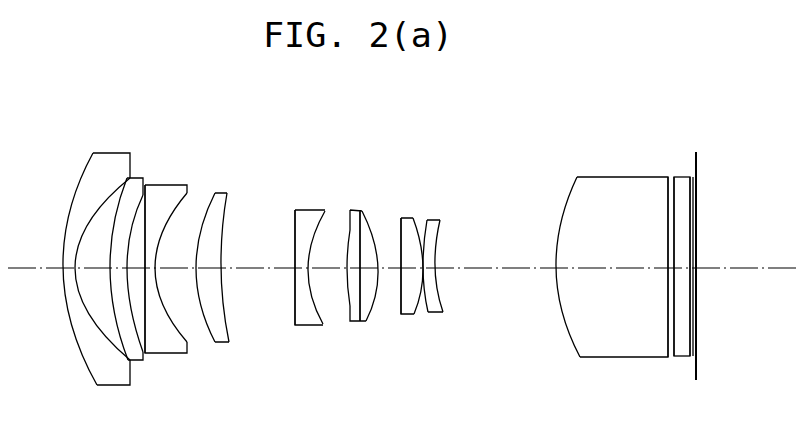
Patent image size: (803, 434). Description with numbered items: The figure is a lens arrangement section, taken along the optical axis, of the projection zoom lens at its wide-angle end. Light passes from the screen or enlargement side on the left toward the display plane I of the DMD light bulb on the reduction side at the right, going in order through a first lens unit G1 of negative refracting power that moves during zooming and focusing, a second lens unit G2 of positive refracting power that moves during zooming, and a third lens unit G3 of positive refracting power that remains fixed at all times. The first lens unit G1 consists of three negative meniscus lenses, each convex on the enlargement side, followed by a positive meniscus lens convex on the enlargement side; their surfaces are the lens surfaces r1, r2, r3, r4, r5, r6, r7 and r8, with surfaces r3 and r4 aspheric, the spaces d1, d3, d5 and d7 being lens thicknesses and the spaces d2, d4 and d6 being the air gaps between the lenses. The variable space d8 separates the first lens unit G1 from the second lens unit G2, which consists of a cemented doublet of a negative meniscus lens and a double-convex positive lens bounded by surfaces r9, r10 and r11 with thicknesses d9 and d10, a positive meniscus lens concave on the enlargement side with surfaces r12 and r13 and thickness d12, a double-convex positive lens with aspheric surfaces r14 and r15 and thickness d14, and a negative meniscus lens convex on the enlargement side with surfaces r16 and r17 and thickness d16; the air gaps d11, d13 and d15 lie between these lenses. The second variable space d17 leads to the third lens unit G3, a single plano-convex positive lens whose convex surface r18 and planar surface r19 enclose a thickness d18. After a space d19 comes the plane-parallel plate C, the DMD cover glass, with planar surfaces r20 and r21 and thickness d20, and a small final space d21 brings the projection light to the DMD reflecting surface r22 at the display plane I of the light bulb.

The first lens unit G1 is at (227, 98).
The second lens unit G2 is at (440, 97).
The third lens unit G3 is at (667, 95).
The plane-parallel plate C is at (688, 95).
The display plane I is at (698, 182).
The first lens surface r1 is at (80, 177).
The second lens surface r2 is at (98, 190).
The third lens surface r3 is at (122, 190).
The fourth lens surface r4 is at (140, 190).
The fifth lens surface r5 is at (162, 186).
The sixth lens surface r6 is at (182, 187).
The seventh lens surface r7 is at (203, 190).
The eighth lens surface r8 is at (237, 190).
The ninth lens surface r9 is at (293, 230).
The tenth lens surface r10 is at (297, 230).
The eleventh lens surface r11 is at (342, 230).
The twelfth lens surface r12 is at (358, 212).
The thirteenth lens surface r13 is at (370, 223).
The fourteenth lens surface r14 is at (398, 220).
The fifteenth lens surface r15 is at (412, 217).
The sixteenth lens surface r16 is at (423, 230).
The seventeenth lens surface r17 is at (447, 227).
The eighteenth lens surface r18 is at (568, 185).
The nineteenth lens surface r19 is at (668, 190).
The twentieth surface r20 is at (678, 177).
The twenty-first surface r21 is at (687, 178).
The reflecting surface r22 is at (697, 162).
The first axial space d1 is at (67, 285).
The second axial space d2 is at (92, 286).
The third axial space d3 is at (110, 362).
The fourth axial space d4 is at (140, 357).
The fifth axial space d5 is at (158, 352).
The sixth axial space d6 is at (175, 286).
The seventh axial space d7 is at (215, 345).
The eighth axial space d8 is at (258, 284).
The ninth axial space d9 is at (305, 325).
The tenth axial space d10 is at (328, 283).
The eleventh axial space d11 is at (350, 321).
The twelfth axial space d12 is at (368, 321).
The thirteenth axial space d13 is at (391, 280).
The fourteenth axial space d14 is at (415, 320).
The fifteenth axial space d15 is at (427, 317).
The sixteenth axial space d16 is at (437, 293).
The seventeenth axial space d17 is at (495, 281).
The eighteenth axial space d18 is at (612, 282).
The nineteenth axial space d19 is at (672, 315).
The twentieth axial space d20 is at (684, 268).
The twenty-first axial space d21 is at (689, 270).